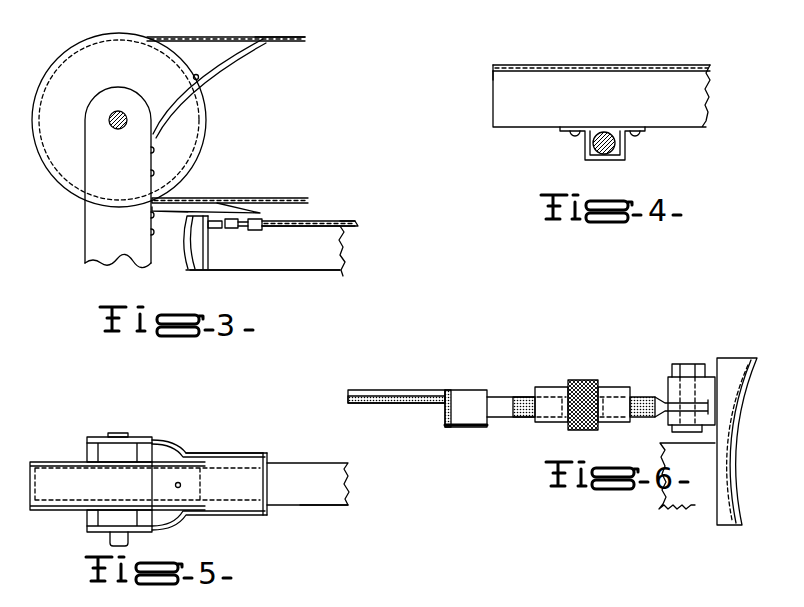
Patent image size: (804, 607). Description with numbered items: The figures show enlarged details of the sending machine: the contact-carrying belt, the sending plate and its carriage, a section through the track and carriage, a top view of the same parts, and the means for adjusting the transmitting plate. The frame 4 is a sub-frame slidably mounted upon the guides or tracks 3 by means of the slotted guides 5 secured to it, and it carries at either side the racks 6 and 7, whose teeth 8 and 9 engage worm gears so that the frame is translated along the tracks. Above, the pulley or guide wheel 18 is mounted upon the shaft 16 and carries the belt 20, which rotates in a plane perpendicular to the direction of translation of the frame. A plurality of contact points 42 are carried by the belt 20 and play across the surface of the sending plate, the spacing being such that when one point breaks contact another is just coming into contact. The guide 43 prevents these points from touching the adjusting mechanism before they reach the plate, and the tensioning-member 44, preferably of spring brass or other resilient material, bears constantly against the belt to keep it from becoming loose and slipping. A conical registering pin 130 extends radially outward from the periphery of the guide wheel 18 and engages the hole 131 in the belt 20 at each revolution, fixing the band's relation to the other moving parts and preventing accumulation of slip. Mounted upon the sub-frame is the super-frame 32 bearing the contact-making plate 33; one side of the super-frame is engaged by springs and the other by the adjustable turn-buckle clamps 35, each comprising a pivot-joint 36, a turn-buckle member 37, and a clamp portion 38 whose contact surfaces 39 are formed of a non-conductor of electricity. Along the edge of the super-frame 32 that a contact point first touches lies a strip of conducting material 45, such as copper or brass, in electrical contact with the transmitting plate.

In FIG. 4, the guides or tracks 3 is at (604, 155).
In FIG. 3, the frame 4 is at (267, 251).
In FIG. 4, the frame 4 is at (601, 96).
In FIG. 6, the frame 4 is at (687, 476).
In FIG. 4, the slotted guides 5 is at (590, 150).
In FIG. 3, the rack 6 is at (193, 242).
In FIG. 6, the rack 7 is at (737, 441).
In FIG. 3, the teeth 8 is at (186, 270).
In FIG. 6, the teeth 9 is at (740, 459).
In FIG. 3, the shaft 16 is at (119, 177).
In FIG. 5, the shaft 16 is at (119, 479).
In FIG. 3, the pulley or guide wheel 18 is at (119, 120).
In FIG. 5, the pulley or guide wheel 18 is at (82, 462).
In FIG. 3, the belt 20 is at (209, 37).
In FIG. 5, the belt 20 is at (250, 486).
In FIG. 3, the super-frame 32 is at (354, 226).
In FIG. 4, the super-frame 32 is at (498, 74).
In FIG. 3, the contact-making plate 33 is at (349, 221).
In FIG. 4, the contact-making plate 33 is at (567, 66).
In FIG. 3, the adjustable turn-buckle clamps 35 is at (214, 229).
In FIG. 6, the adjustable turn-buckle clamps 35 is at (670, 389).
In FIG. 6, the pivot-joint 36 is at (676, 369).
In FIG. 3, the turn-buckle member 37 is at (232, 229).
In FIG. 6, the turn-buckle member 37 is at (597, 394).
In FIG. 6, the clamp portion 38 is at (473, 396).
In FIG. 6, the contact surfaces 39 is at (433, 404).
In FIG. 3, the contact points 42 is at (236, 206).
In FIG. 3, the guide 43 is at (201, 186).
In FIG. 5, the guide 43 is at (231, 453).
In FIG. 3, the tensioning-member 44 is at (218, 67).
In FIG. 5, the tensioning-member 44 is at (234, 501).
In FIG. 3, the strip of conducting material 45 is at (255, 230).
In FIG. 3, the conical registering pin 130 is at (197, 74).
In FIG. 5, the conical registering pin 130 is at (180, 488).
In FIG. 3, the hole 131 is at (252, 37).
In FIG. 5, the hole 131 is at (314, 487).